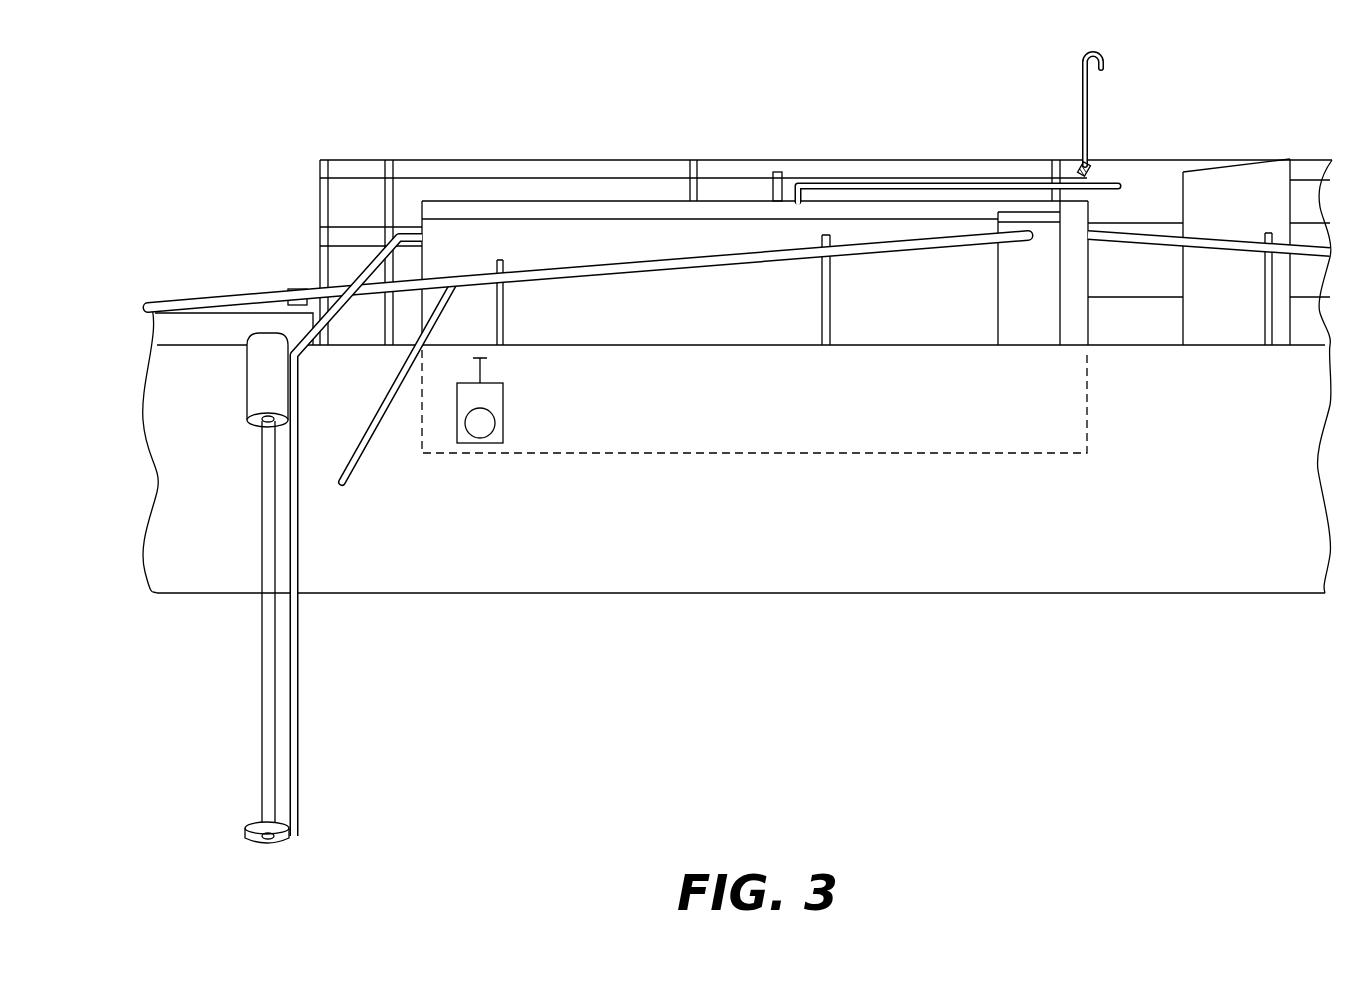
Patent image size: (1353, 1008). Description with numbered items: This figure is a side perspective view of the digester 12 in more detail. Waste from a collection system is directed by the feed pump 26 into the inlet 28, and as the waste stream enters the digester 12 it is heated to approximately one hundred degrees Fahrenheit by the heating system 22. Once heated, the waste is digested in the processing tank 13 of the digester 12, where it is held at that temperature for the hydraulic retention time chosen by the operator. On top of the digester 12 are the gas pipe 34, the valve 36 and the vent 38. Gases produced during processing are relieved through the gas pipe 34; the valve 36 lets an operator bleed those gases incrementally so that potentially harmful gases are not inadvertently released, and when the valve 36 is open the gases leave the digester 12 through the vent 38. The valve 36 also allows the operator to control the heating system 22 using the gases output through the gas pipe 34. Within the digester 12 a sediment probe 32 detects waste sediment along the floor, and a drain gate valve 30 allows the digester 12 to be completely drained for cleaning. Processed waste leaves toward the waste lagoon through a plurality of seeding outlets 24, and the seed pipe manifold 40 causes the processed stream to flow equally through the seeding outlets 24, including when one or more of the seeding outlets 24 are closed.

The digester 12 is at (688, 468).
The processing tank 13 is at (800, 428).
The heating system 22 is at (1250, 142).
The seeding outlets 24 is at (341, 490).
The feed pump 26 is at (258, 393).
The inlet 28 is at (293, 722).
The drain gate valve 30 is at (481, 432).
The sediment probe 32 is at (777, 170).
The gas pipe 34 is at (890, 188).
The valve 36 is at (1078, 166).
The vent 38 is at (1082, 85).
The seed pipe manifold 40 is at (1028, 332).